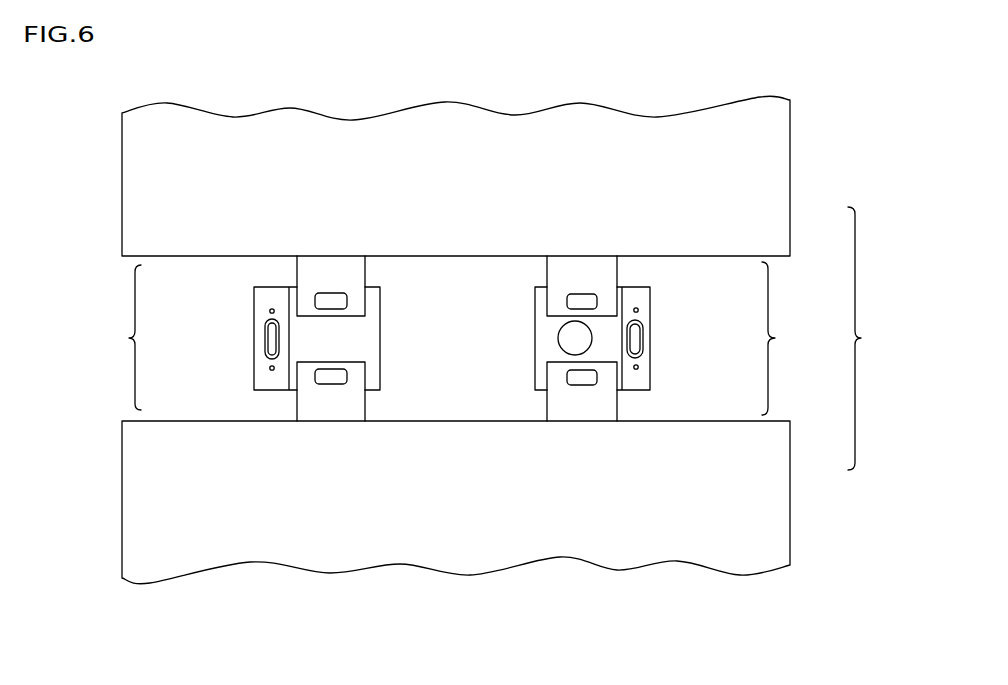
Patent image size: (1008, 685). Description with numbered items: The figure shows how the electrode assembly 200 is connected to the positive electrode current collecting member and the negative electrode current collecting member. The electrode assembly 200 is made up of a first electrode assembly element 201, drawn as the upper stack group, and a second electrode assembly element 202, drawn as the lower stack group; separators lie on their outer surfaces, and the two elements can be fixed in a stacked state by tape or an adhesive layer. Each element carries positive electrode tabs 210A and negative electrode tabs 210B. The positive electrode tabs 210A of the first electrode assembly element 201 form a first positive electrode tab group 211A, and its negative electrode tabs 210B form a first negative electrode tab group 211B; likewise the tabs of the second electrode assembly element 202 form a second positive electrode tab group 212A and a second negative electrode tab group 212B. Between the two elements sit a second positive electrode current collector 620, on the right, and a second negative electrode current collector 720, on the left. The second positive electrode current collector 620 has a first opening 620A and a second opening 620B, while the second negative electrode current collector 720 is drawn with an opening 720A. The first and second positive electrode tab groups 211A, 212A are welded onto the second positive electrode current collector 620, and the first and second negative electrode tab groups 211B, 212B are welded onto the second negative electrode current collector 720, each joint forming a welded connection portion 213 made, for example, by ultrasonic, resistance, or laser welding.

The electrode assembly 200 is at (874, 338).
The first electrode assembly element 201 is at (790, 220).
The second electrode assembly element 202 is at (790, 454).
The positive electrode tab 210A is at (795, 338).
The negative electrode tab 210B is at (108, 337).
The first positive electrode tab group 211A is at (600, 274).
The first negative electrode tab group 211B is at (310, 274).
The second positive electrode tab group 212A is at (600, 403).
The second negative electrode tab group 212B is at (310, 405).
The welded connection portion 213 is at (320, 302).
The second positive electrode current collector 620 is at (547, 347).
The first opening 620A is at (620, 347).
The second opening 620B is at (559, 337).
The second negative electrode current collector 720 is at (365, 337).
The opening 720A is at (280, 347).